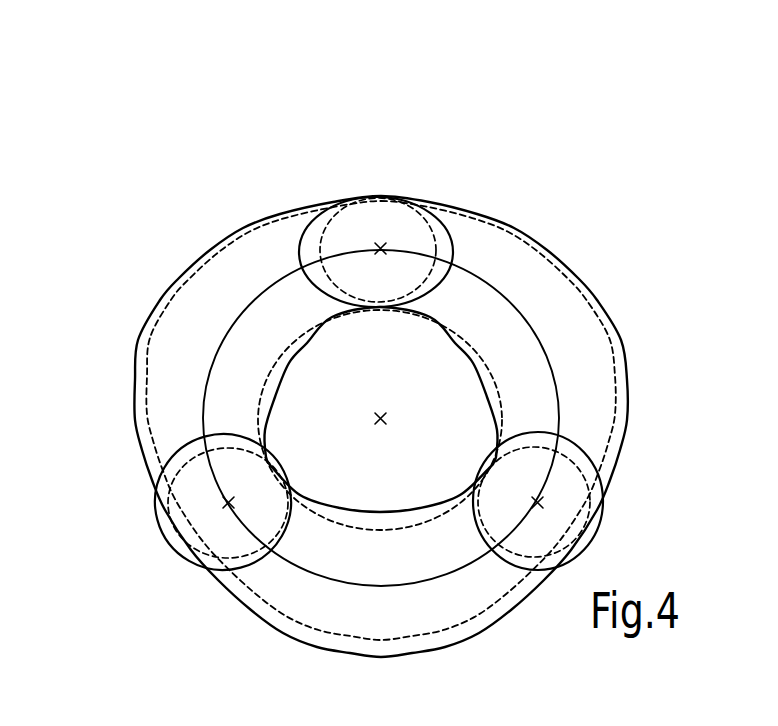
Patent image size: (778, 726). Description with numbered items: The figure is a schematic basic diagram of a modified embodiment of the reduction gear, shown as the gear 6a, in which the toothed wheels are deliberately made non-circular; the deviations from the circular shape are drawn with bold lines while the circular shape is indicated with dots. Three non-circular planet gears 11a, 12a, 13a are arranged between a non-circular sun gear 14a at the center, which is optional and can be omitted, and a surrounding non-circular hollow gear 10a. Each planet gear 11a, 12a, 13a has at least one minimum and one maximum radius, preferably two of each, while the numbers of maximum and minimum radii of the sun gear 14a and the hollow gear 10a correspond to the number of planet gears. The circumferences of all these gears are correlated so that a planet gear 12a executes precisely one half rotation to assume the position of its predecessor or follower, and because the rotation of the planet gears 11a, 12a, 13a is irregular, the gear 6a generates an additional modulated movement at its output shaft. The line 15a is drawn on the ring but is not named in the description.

The gear 6a is at (568, 153).
The non-circular hollow gear 10a is at (582, 268).
The non-circular planet gear 11a is at (448, 244).
The non-circular planet gear 12a is at (190, 437).
The non-circular planet gear 13a is at (563, 434).
The non-circular sun gear 14a is at (410, 378).
The inner ring surface 15a is at (367, 586).